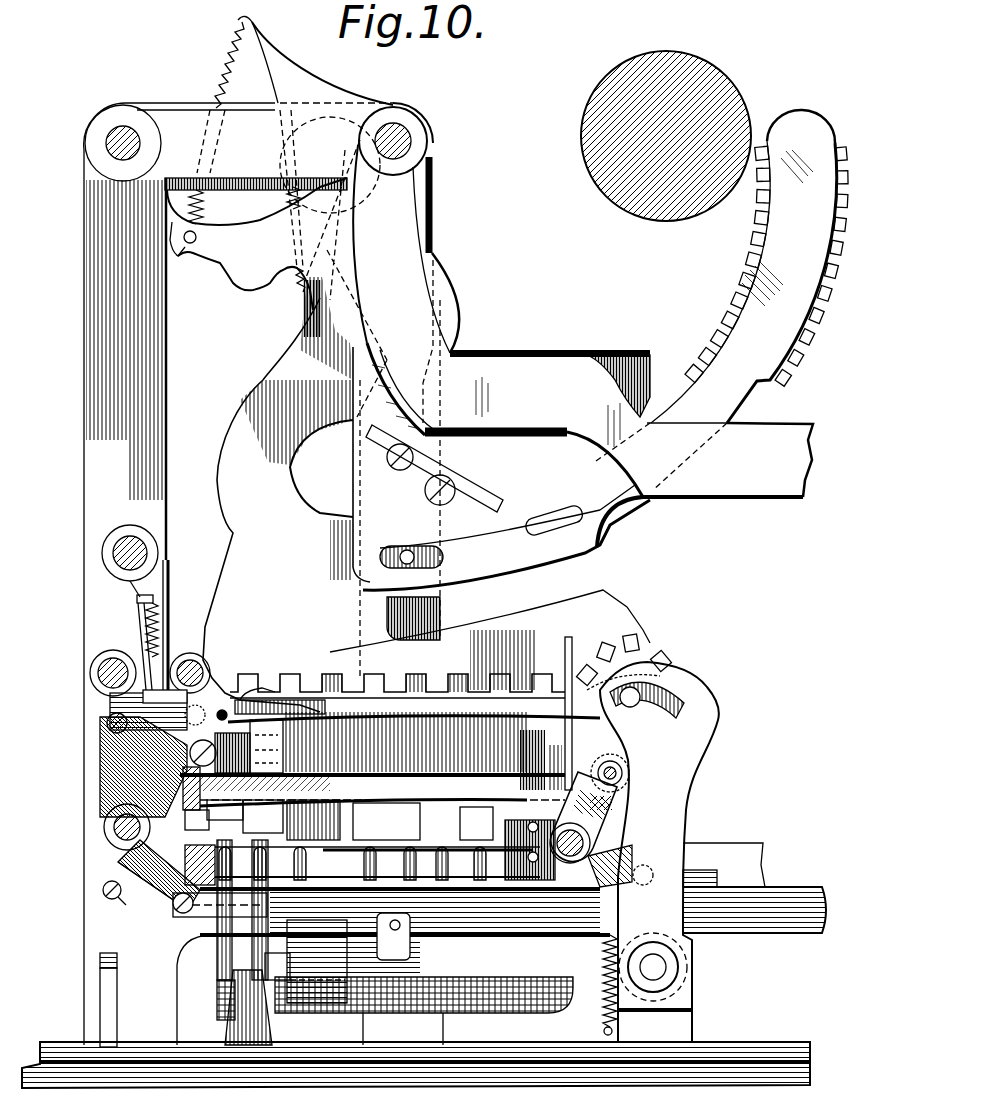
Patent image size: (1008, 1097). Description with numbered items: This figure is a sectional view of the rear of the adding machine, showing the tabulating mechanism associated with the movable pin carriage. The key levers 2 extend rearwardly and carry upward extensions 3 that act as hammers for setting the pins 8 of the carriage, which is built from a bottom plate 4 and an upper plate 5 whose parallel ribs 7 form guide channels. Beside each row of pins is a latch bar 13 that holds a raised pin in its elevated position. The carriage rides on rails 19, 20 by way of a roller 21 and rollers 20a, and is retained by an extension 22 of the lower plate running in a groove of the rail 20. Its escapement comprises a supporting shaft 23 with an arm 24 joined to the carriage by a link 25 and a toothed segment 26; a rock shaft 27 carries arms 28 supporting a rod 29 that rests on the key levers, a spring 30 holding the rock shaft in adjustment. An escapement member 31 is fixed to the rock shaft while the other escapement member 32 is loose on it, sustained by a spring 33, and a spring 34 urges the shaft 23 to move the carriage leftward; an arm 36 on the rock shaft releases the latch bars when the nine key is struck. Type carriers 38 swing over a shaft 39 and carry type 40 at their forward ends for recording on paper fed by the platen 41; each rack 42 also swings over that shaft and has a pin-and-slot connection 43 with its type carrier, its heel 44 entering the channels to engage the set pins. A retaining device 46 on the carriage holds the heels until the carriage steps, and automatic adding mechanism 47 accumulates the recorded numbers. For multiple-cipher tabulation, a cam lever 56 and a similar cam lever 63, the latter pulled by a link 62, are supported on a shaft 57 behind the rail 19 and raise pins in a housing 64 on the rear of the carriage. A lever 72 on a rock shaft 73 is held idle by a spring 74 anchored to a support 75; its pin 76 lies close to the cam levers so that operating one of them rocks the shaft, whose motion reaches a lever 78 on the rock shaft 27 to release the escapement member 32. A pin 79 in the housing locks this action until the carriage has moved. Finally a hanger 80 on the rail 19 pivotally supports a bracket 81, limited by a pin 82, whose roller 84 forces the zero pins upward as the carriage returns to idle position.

The key levers 2 is at (793, 897).
The upward extensions 3 is at (228, 862).
The bottom plate 4 is at (386, 824).
The upper plate 5 is at (453, 690).
The parallel ribs 7 is at (333, 700).
The pins 8 is at (262, 835).
The latch bar 13 is at (147, 747).
The rail 19 is at (363, 791).
The rail 20 is at (540, 773).
The rollers 20a is at (534, 708).
The roller 21 is at (228, 680).
The extension of the lower plate 22 is at (560, 778).
The supporting shaft 23 is at (313, 1025).
The arm 24 is at (382, 789).
The link 25 is at (433, 753).
The toothed segment 26 is at (460, 847).
The rock shaft 27 is at (590, 835).
The arms 28 is at (622, 852).
The rod 29 is at (645, 888).
The spring 30 is at (603, 997).
The escapement member 31 is at (584, 816).
The escapement member 32 is at (543, 862).
The spring 33 is at (476, 823).
The spring 34 is at (265, 963).
The arm 36 is at (620, 831).
The type carriers 38 is at (707, 383).
The shaft 39 is at (412, 138).
The type 40 is at (746, 256).
The platen 41 is at (722, 74).
The rack 42 is at (557, 616).
The pin-and-slot connection 43 is at (410, 560).
The heels 44 is at (235, 688).
The retaining device 46 is at (260, 690).
The automatic adding mechanism 47 is at (667, 660).
The cam lever 56 is at (214, 815).
The shaft 57 is at (123, 827).
The link 62 is at (138, 903).
The cam lever 63 is at (118, 866).
The housing 64 is at (107, 703).
The lever 72 is at (143, 655).
The rock shaft 73 is at (108, 670).
The spring 74 is at (143, 632).
The support 75 is at (133, 610).
The pin 76 is at (107, 773).
The lever 78 is at (614, 803).
The pin 79 is at (192, 660).
The hanger 80 is at (108, 890).
The bracket 81 is at (123, 903).
The pin 82 is at (99, 911).
The roller 84 is at (263, 816).